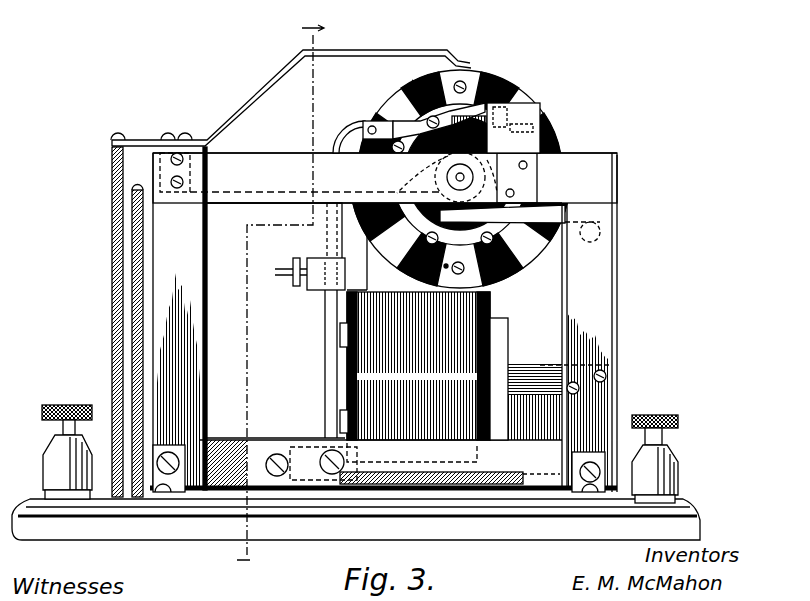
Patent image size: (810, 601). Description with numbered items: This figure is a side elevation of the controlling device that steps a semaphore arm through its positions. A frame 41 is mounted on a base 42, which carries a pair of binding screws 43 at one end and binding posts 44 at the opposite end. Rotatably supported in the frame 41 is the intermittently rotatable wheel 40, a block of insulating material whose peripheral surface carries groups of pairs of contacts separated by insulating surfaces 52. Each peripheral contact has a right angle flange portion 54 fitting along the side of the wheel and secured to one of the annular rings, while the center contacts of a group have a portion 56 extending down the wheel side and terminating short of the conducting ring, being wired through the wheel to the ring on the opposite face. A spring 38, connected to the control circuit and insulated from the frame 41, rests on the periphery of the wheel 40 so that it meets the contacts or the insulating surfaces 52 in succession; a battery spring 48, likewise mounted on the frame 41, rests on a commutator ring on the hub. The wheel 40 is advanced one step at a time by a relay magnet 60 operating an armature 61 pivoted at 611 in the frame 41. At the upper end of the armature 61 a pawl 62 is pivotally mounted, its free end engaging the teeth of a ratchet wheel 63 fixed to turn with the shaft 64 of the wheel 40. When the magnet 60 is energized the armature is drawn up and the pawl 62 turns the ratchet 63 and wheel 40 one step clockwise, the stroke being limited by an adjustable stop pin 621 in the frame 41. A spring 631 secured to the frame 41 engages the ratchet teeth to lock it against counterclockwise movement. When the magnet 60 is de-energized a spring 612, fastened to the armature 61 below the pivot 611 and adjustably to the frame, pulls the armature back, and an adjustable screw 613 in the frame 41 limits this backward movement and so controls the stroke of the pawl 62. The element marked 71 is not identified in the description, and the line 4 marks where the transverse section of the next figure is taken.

The section line 4— 4 is at (280, 298).
The spring 38 is at (358, 52).
The intermittently rotatable wheel 40 is at (512, 268).
The frame 41 is at (597, 277).
The base 42 is at (537, 538).
The binding screws 43 is at (680, 477).
The binding posts 44 is at (45, 458).
The spring 48 is at (256, 188).
The insulating surfaces 52 is at (541, 108).
The right angle flange portion 54 is at (412, 80).
The side portion of center contact 56 is at (472, 72).
The relay magnet 60 is at (424, 366).
The armature 61 is at (328, 350).
The pivot 611 is at (326, 453).
The spring 612 is at (365, 488).
The adjustable screw 613 is at (292, 280).
The pawl 62 is at (364, 128).
The adjustable stop pin 621 is at (474, 118).
The ratchet wheel 63 is at (481, 153).
The spring 631 is at (560, 228).
The shaft 64 is at (456, 177).
The post 71 is at (112, 273).